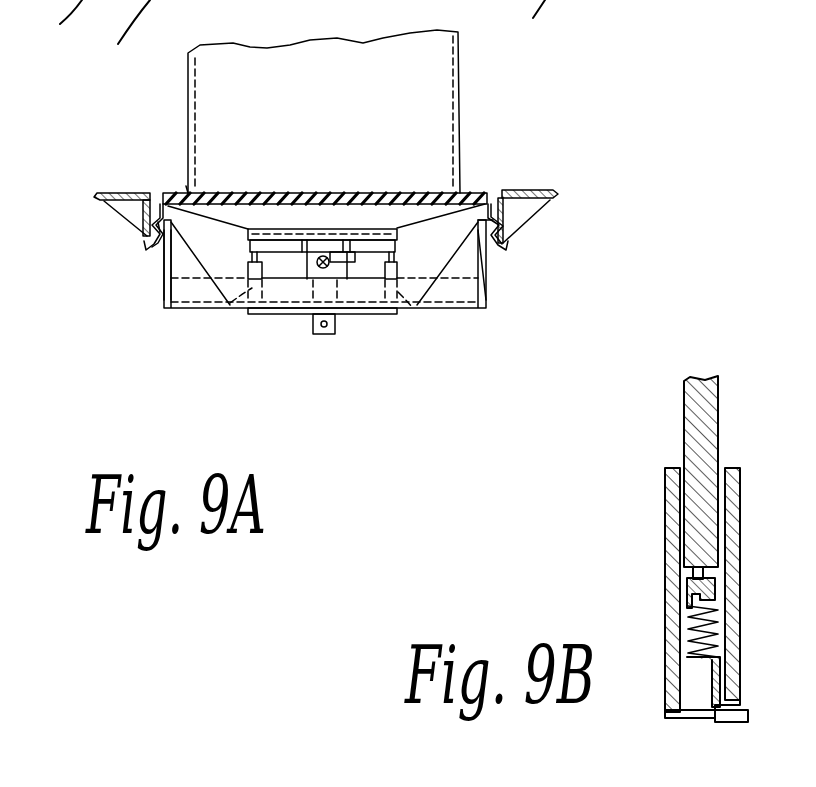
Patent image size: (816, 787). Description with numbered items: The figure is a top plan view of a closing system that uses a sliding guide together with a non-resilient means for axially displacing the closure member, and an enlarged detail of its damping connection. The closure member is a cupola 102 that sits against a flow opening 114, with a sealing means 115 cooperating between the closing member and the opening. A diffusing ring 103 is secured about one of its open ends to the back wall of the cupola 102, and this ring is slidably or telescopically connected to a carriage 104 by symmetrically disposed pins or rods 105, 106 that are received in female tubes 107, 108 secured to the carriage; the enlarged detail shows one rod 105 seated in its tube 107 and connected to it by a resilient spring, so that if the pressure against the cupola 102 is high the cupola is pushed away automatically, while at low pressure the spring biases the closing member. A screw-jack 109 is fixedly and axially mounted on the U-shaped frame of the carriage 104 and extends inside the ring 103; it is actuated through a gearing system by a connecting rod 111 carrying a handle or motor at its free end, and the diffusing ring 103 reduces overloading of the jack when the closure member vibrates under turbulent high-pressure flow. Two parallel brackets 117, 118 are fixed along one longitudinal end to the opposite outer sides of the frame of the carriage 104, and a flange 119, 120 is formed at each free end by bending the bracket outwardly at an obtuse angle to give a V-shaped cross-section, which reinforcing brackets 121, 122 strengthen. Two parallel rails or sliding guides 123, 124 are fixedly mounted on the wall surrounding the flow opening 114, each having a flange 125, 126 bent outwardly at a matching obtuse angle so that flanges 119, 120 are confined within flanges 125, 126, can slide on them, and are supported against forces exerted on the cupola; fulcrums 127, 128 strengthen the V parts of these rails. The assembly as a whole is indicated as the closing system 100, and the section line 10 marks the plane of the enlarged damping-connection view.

In FIG. 9A, the section line 10 is at (285, 88).
In FIG. 9A, the mounting assembly 100 is at (444, 403).
In FIG. 9A, the cupola 102 is at (437, 203).
In FIG. 9A, the diffusing ring 103 is at (297, 229).
In FIG. 9A, the carriage 104 is at (358, 292).
In FIG. 9A, the rod 105 is at (400, 257).
In FIG. 9B, the rod 105 is at (698, 430).
In FIG. 9A, the rod 106 is at (250, 258).
In FIG. 9A, the tube 107 is at (405, 308).
In FIG. 9B, the tube 107 is at (737, 513).
In FIG. 9A, the tube 108 is at (230, 305).
In FIG. 9A, the screw-jack 109 is at (345, 258).
In FIG. 9A, the connecting rod 111 is at (321, 250).
In FIG. 9A, the flow opening 114 is at (430, 76).
In FIG. 9A, the sealing means 115 is at (188, 195).
In FIG. 9A, the bracket 117 is at (485, 287).
In FIG. 9A, the bracket 118 is at (164, 292).
In FIG. 9A, the flange 119 is at (492, 207).
In FIG. 9A, the flange 120 is at (157, 215).
In FIG. 9A, the reinforcing bracket 121 is at (470, 265).
In FIG. 9A, the reinforcing bracket 122 is at (181, 253).
In FIG. 9A, the rail 123 is at (525, 195).
In FIG. 9A, the rail 124 is at (117, 195).
In FIG. 9A, the flange 125 is at (492, 250).
In FIG. 9A, the flange 126 is at (158, 240).
In FIG. 9A, the fulcrum 127 is at (520, 215).
In FIG. 9A, the fulcrum 128 is at (130, 207).